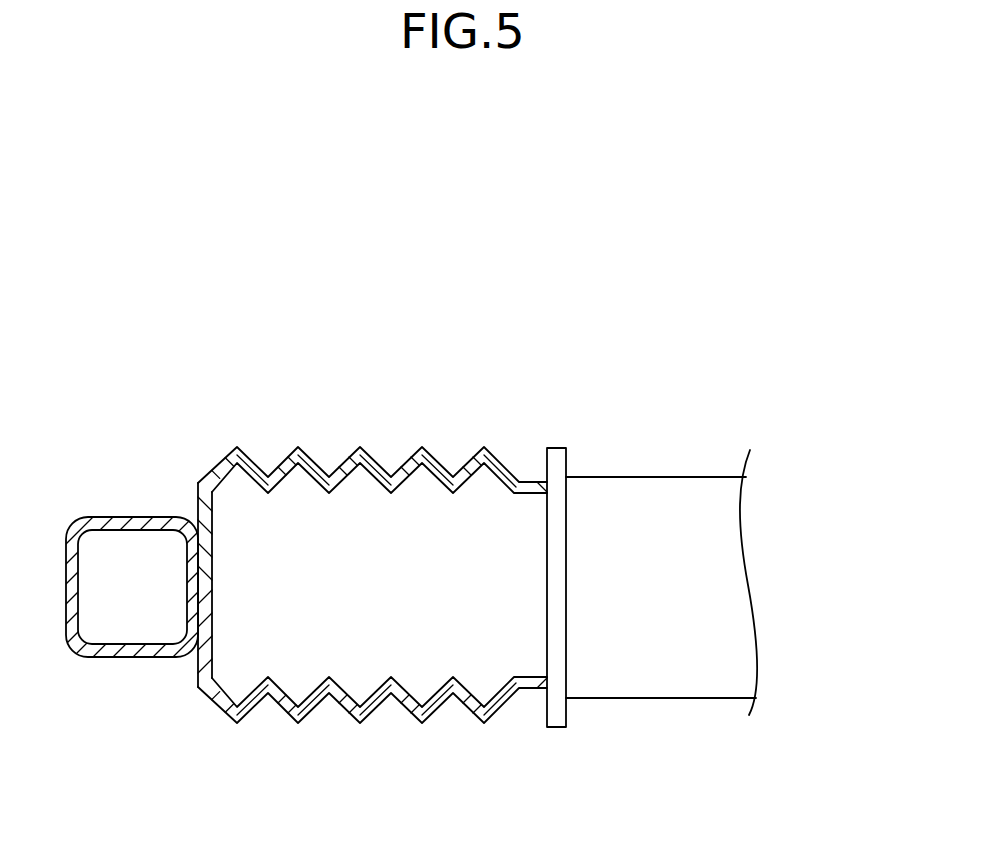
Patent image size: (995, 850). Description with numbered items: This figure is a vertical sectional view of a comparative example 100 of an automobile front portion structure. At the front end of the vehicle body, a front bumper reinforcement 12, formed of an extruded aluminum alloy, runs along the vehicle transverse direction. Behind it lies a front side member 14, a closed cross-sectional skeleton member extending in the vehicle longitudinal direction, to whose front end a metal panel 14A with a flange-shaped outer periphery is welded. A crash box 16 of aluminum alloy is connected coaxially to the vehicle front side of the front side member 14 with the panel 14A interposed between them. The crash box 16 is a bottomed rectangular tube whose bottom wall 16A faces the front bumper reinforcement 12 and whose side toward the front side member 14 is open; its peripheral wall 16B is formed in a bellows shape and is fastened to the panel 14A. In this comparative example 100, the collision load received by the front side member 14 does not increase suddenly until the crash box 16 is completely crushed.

The comparative example 100 is at (477, 326).
The front bumper reinforcement 12 is at (103, 516).
The front side member 14 is at (676, 477).
The panel 14A is at (557, 446).
The crash box 16 is at (382, 465).
The bottom wall 16A is at (172, 675).
The peripheral wall 16B is at (345, 717).